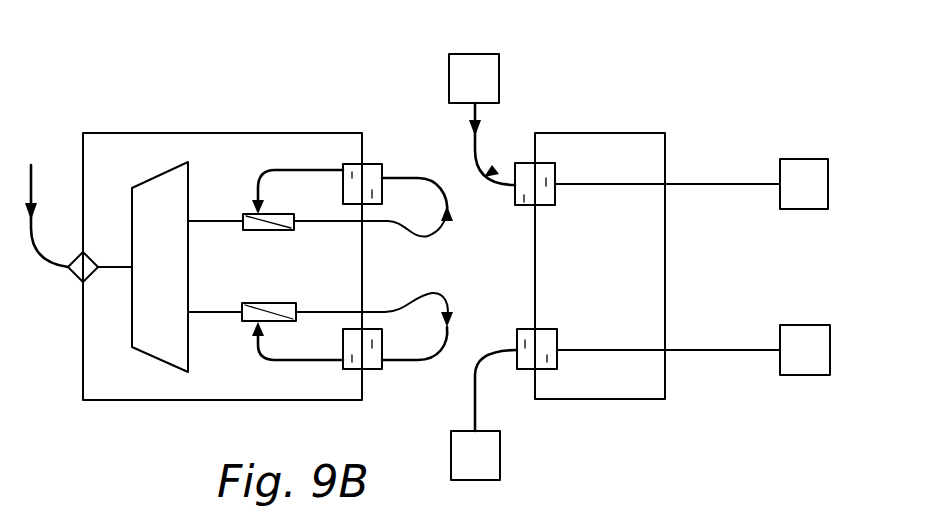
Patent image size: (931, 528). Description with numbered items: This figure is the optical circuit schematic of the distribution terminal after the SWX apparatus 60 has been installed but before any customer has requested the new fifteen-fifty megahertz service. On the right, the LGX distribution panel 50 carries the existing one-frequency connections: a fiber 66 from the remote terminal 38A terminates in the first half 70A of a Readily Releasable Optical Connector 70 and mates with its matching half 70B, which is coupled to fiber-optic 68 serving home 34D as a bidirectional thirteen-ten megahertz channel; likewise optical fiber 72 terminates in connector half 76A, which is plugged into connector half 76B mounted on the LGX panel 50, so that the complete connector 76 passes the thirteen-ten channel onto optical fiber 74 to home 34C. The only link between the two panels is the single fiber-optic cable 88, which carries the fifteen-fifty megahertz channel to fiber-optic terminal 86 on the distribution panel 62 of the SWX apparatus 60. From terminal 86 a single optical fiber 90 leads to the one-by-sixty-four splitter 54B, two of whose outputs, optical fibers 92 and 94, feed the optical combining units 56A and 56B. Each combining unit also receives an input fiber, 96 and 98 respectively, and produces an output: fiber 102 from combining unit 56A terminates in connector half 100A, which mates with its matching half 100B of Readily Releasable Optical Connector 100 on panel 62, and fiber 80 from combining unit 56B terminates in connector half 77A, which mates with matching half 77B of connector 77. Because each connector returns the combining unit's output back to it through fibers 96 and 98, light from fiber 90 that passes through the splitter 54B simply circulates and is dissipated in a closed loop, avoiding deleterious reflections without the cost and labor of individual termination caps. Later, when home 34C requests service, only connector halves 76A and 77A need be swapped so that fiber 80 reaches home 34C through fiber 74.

The SWX apparatus 60 is at (118, 422).
The SWX distribution panel 62 is at (113, 151).
The 64X splitter 54B is at (151, 338).
The fiber-optic cable 88 is at (33, 182).
The fiber-optic terminal 86 is at (75, 279).
The optical fiber 90 is at (97, 272).
The optical fiber 92 is at (208, 222).
The optical combining unit 56A is at (276, 232).
The optical fiber 96 is at (257, 203).
The Readily Releasable Optical Connector 100 is at (367, 155).
The first connector inner port 100B is at (352, 174).
The Readily Releasable Optical Connector 100A is at (372, 196).
The optical fiber 102 is at (446, 187).
The optical fiber 94 is at (214, 304).
The optical combining unit 56B is at (283, 302).
The optical fiber 98 is at (256, 344).
The Readily Releasable Optical Connector 77 is at (386, 382).
The Readily Releasable Optical Connector 77A is at (381, 346).
The Readily Releasable Optical Connector 77B is at (352, 369).
The optical fiber 80 is at (447, 352).
The remote terminal 38A is at (500, 81).
The fiber 66 is at (487, 172).
The Readily Releasable Optical Connector 70 is at (570, 155).
The first half of Readily Releasable Optical Connector 70A is at (522, 200).
The matching half of Readily Releasable Optical Connector 70B is at (548, 188).
The LGX distribution panel 50 is at (640, 399).
The fiber-optic 68 is at (707, 186).
The home 34D is at (808, 168).
The second LGX connector 76 is at (568, 333).
The Readily Releasable Optical Connector 76A is at (518, 338).
The Readily Releasable Optical Connector 76B is at (548, 368).
The optical fiber 72 is at (488, 360).
The optical fiber 74 is at (711, 352).
The home 34C is at (815, 338).